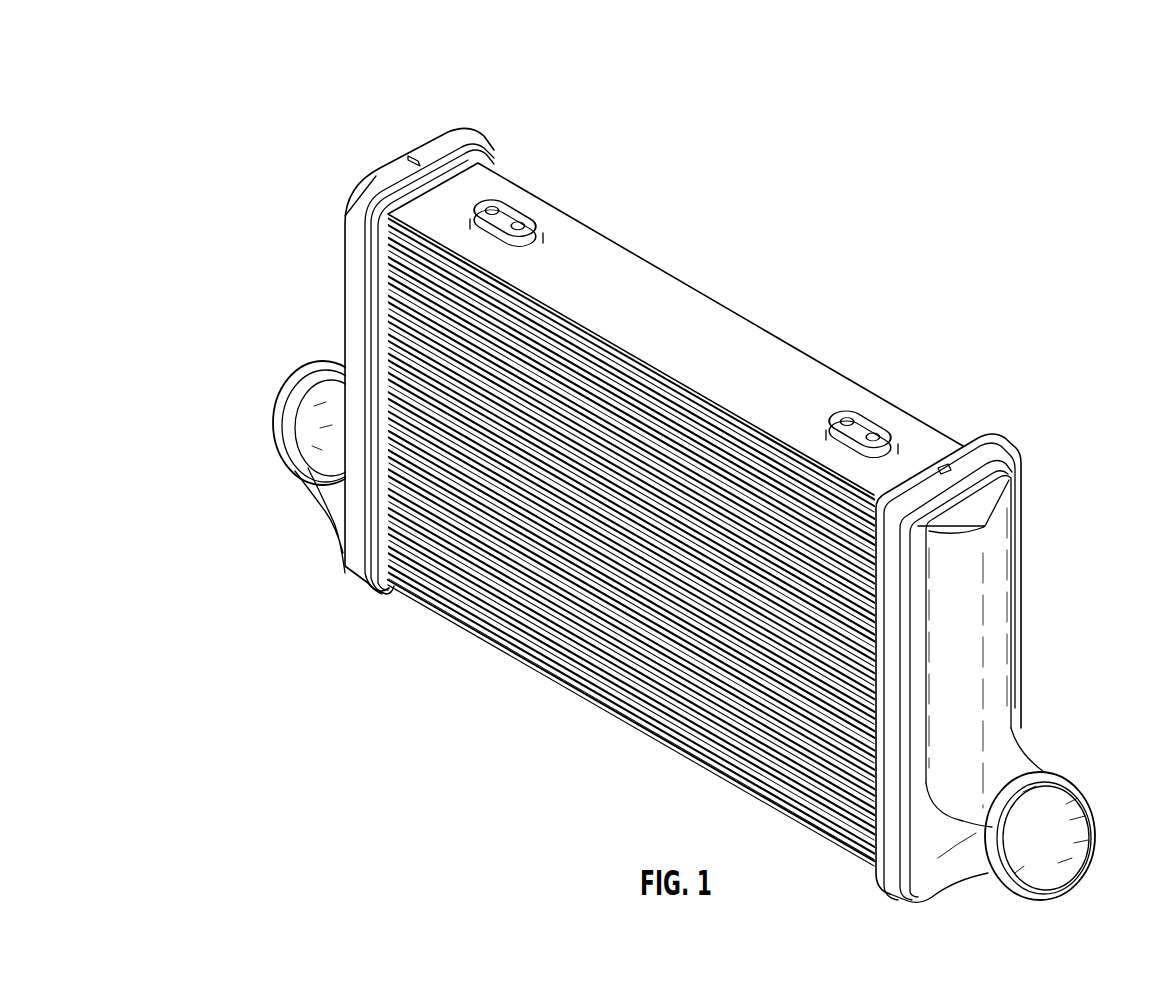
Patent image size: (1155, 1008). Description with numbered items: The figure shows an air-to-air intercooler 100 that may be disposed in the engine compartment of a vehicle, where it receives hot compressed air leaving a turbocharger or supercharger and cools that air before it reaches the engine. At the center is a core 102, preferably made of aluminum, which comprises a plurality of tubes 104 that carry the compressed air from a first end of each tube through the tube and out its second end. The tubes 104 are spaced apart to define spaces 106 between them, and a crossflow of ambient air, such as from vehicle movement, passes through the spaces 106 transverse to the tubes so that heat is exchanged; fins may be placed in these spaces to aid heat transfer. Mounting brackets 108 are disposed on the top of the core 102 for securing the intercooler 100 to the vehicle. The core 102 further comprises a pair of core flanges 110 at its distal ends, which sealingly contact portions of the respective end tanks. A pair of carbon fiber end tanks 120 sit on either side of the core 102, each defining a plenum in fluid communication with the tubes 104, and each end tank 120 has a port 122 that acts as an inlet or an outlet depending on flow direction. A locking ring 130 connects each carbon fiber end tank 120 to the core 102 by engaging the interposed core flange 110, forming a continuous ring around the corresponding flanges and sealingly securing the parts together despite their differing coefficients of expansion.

The intercooler 100 is at (236, 126).
The core 102 is at (638, 242).
The tubes 104 is at (485, 584).
The spaces 106 is at (630, 700).
The mounting brackets 108 is at (496, 210).
The core flanges 110 is at (960, 432).
The carbon fiber end tanks 120 is at (1016, 590).
The port 122 is at (1070, 777).
The locking ring 130 is at (462, 122).